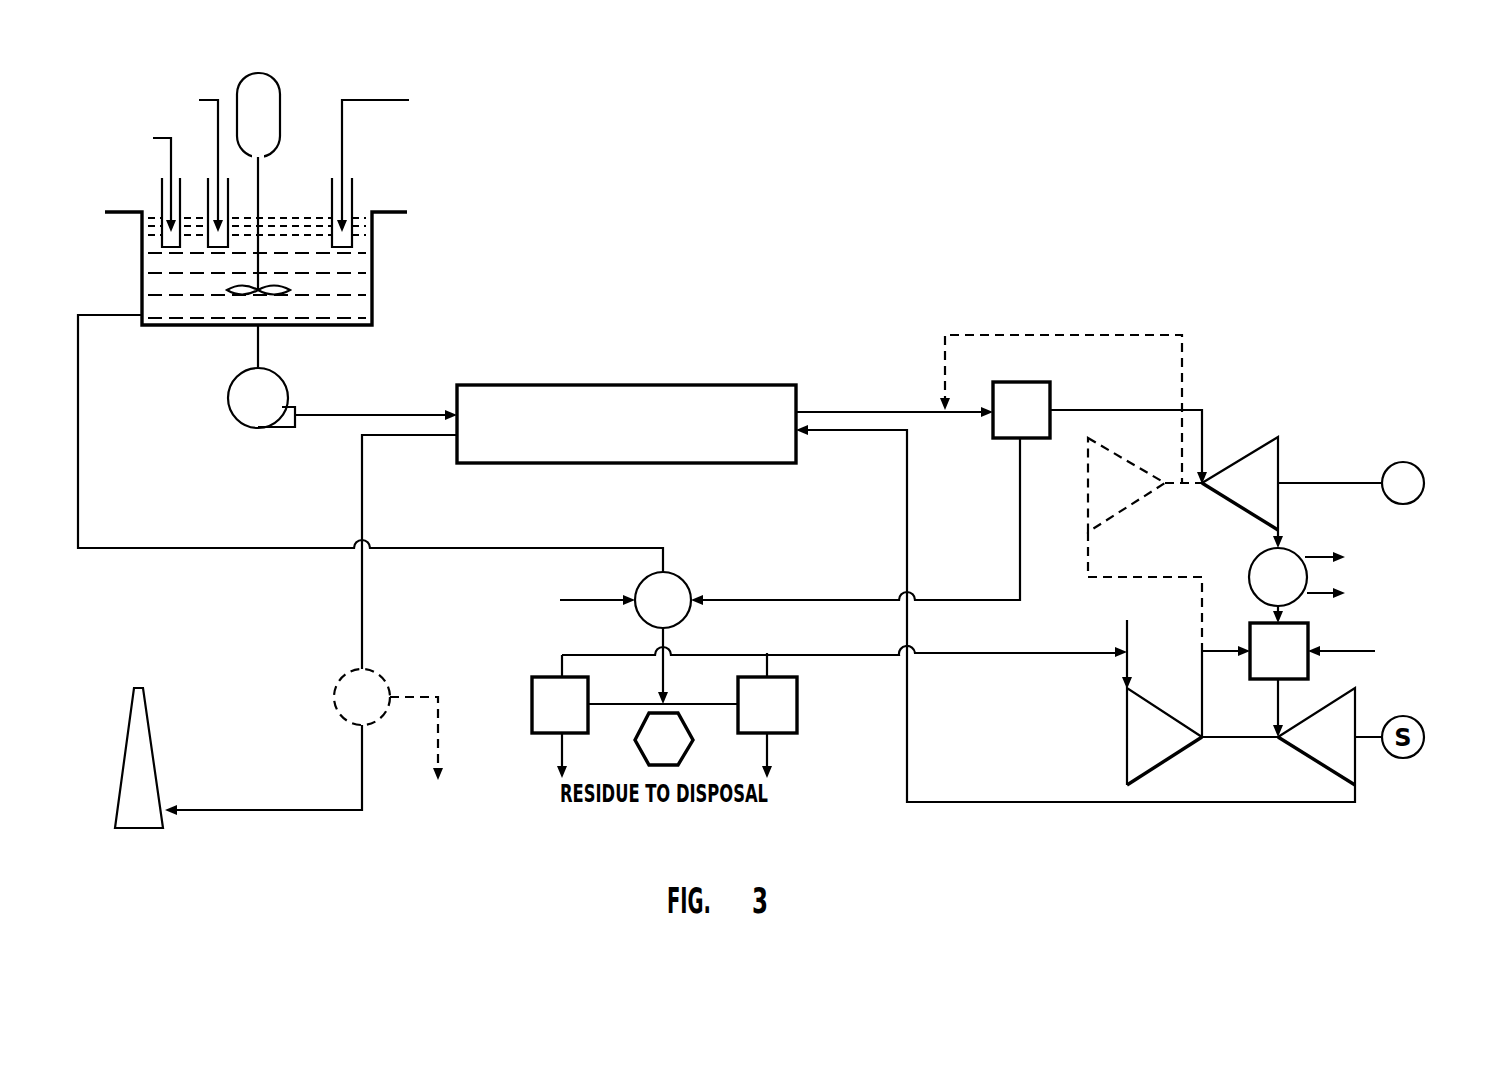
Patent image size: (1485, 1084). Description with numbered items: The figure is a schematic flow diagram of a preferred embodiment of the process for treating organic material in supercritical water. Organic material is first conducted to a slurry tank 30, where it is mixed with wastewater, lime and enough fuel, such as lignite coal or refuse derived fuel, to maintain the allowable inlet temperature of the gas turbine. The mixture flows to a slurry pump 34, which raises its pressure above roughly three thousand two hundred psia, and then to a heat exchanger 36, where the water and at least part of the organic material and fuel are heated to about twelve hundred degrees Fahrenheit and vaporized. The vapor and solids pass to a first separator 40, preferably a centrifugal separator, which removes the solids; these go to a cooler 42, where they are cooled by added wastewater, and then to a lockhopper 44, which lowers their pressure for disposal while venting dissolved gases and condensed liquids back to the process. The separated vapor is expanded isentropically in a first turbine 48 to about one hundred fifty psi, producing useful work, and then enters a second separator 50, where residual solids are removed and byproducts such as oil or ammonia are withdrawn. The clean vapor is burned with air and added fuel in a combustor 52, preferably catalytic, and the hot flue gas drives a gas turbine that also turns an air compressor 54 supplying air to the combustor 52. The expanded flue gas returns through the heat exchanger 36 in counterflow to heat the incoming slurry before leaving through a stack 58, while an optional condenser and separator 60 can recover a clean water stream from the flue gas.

The slurry tank 30 is at (356, 262).
The slurry pump 34 is at (242, 380).
The heat exchanger 36 is at (645, 391).
The first separator 40 is at (1040, 388).
The cooler 42 is at (673, 584).
The lockhopper 44 is at (664, 739).
The first turbine 48 is at (1270, 469).
The second separator 50 is at (1290, 564).
The combustor 52 is at (1268, 666).
The air compressor 54 is at (1138, 736).
The stack 58 is at (129, 768).
The condenser and separator 60 is at (351, 681).